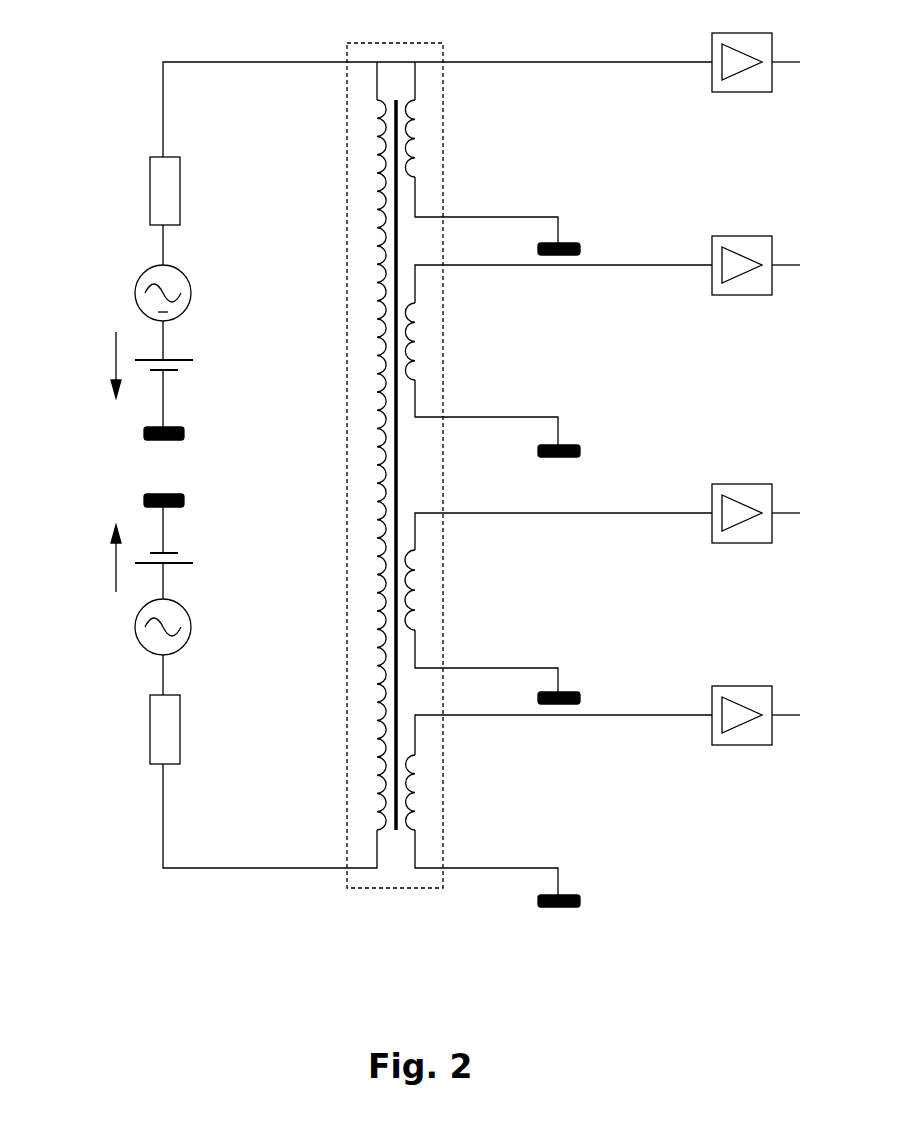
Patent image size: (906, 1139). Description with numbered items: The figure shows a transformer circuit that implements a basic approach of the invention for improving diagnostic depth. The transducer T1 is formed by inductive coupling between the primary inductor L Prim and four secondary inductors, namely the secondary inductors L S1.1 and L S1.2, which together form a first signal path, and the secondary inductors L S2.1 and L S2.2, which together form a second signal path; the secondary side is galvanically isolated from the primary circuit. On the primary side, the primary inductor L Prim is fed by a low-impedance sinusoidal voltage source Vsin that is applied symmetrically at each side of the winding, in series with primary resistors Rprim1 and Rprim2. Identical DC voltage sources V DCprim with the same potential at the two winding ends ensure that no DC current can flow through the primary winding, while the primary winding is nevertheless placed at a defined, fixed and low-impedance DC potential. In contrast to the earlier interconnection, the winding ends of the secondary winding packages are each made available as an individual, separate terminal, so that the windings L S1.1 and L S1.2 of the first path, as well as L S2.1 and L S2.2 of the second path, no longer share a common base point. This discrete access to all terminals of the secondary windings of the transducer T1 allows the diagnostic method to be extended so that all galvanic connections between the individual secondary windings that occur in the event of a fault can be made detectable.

The transducer T1 is at (493, 462).
The primary inductor L Prim is at (330, 465).
The secondary inductor L S1.1 is at (492, 177).
The secondary inductor L S2.1 is at (558, 361).
The secondary inductor L S2.2 is at (558, 608).
The secondary inductor L S1.2 is at (559, 811).
The first primary resistor Rprim1 is at (196, 191).
The second primary resistor Rprim2 is at (196, 729).
The sinusoidal voltage source Vsin is at (134, 627).
The DC voltage source V DCprim is at (105, 462).